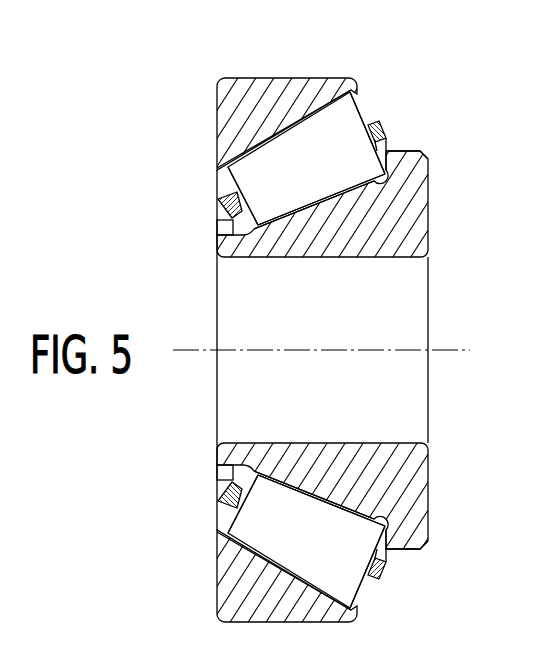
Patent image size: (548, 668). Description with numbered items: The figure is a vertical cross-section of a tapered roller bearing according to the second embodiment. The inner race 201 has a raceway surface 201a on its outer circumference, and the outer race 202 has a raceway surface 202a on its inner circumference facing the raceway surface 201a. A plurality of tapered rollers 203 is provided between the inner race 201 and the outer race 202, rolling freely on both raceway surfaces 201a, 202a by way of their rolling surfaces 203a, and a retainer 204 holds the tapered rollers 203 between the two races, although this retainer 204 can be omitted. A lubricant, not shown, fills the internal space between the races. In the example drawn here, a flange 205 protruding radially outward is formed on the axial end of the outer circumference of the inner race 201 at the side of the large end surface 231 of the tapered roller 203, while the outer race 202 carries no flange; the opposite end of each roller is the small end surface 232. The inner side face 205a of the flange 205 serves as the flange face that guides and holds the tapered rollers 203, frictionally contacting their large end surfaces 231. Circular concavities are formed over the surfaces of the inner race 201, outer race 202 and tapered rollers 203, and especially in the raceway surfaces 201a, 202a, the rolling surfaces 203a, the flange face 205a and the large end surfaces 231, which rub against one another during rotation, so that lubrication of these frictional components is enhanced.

The inner race 201 is at (418, 204).
The raceway surface 201a is at (347, 186).
The outer race 202 is at (255, 97).
The raceway surface 202a is at (308, 124).
The tapered roller 203 is at (315, 193).
The rolling surface 203a is at (289, 218).
The retainer 204 is at (218, 204).
The flange 205 is at (422, 156).
The inner side face of the flange 205a is at (386, 143).
The large end surface 231 is at (357, 103).
The small end surface 232 is at (218, 181).